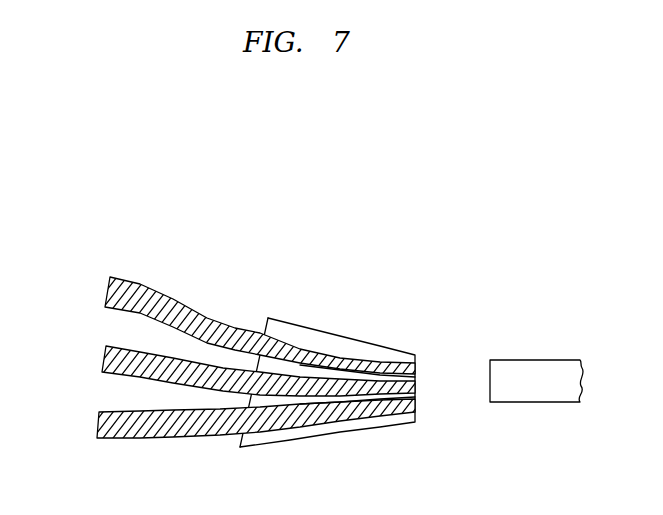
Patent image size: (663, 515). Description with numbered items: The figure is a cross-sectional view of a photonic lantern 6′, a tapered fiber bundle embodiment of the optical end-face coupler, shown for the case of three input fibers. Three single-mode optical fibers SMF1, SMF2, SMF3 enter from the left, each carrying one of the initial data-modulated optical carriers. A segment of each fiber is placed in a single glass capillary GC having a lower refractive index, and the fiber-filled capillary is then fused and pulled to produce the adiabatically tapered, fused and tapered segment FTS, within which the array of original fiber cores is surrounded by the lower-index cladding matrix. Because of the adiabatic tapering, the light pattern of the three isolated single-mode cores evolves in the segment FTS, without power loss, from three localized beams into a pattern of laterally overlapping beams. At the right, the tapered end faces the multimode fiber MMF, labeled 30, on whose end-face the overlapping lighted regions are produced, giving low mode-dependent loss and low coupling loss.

The photonic lantern 6′ is at (422, 217).
The fused and tapered segment FTS is at (422, 290).
The glass capillary GC is at (365, 344).
The first single-mode fiber SMF1 is at (106, 298).
The second single-mode fiber SMF2 is at (103, 360).
The third single-mode fiber SMF3 is at (97, 426).
The multimode fiber 30 is at (490, 398).
The multimode fiber MMF is at (536, 381).